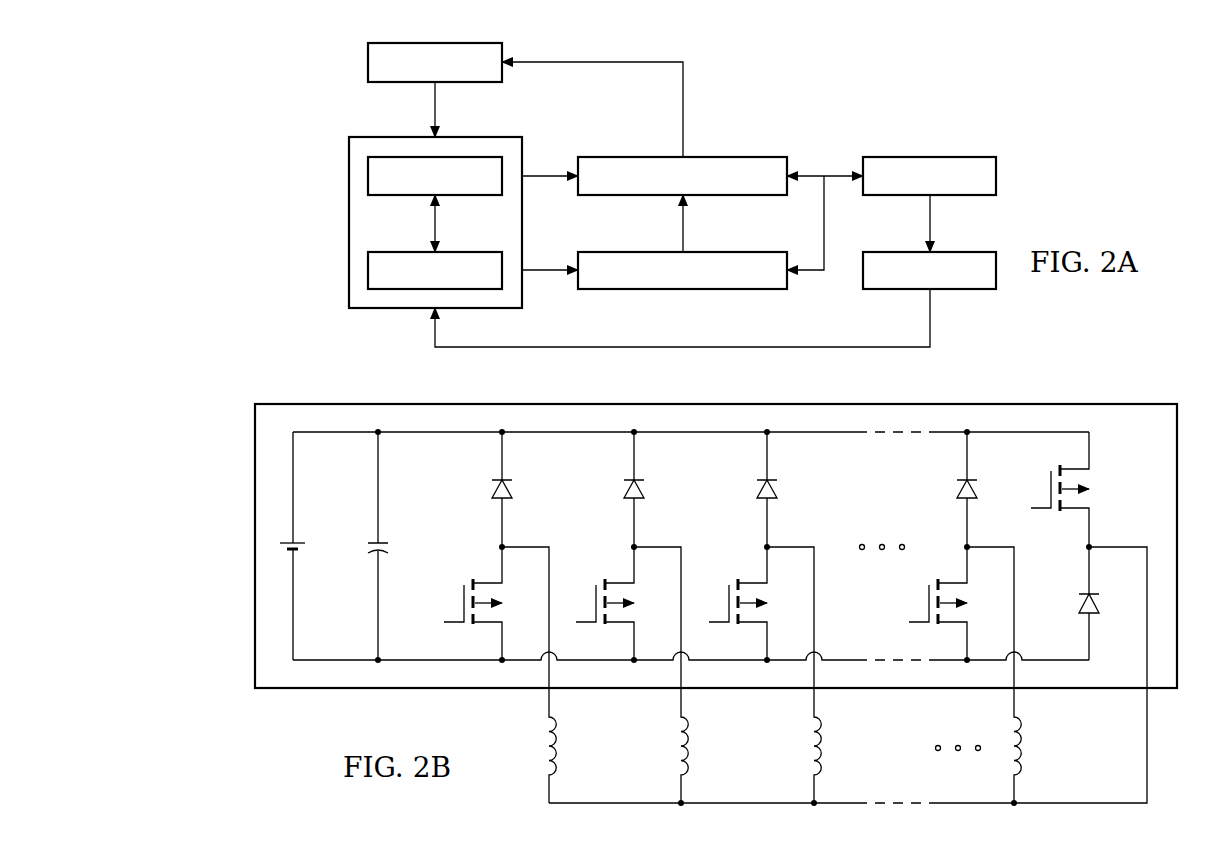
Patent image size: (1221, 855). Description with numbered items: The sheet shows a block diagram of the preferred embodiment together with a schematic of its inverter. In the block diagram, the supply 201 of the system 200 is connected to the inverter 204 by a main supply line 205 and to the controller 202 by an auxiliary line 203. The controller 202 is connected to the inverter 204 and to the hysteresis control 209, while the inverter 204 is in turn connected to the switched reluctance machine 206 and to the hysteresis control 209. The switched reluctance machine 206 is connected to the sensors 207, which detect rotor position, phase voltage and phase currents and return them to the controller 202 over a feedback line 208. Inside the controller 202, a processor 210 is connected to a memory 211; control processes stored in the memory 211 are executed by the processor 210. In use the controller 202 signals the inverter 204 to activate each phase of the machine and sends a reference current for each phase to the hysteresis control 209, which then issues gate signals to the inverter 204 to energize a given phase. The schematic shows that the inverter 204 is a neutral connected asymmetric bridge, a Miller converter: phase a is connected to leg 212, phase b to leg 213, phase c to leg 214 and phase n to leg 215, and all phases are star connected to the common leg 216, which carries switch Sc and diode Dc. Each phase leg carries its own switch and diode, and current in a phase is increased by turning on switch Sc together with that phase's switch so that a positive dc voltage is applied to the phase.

In FIG. 2A, the system 200 is at (842, 85).
In FIG. 2A, the supply 201 is at (368, 52).
In FIG. 2A, the controller 202 is at (349, 223).
In FIG. 2A, the auxiliary line 203 is at (433, 108).
In FIG. 2A, the inverter 204 is at (733, 157).
In FIG. 2B, the inverter 204 is at (255, 488).
In FIG. 2A, the main supply line 205 is at (683, 97).
In FIG. 2A, the switched reluctance machine 206 is at (943, 157).
In FIG. 2A, the sensors 207 is at (960, 290).
In FIG. 2A, the feedback line 208 is at (563, 346).
In FIG. 2A, the hysteresis control 209 is at (702, 290).
In FIG. 2A, the processor 210 is at (408, 196).
In FIG. 2A, the memory 211 is at (463, 252).
In FIG. 2B, the leg 212 is at (502, 528).
In FIG. 2B, the leg 213 is at (634, 528).
In FIG. 2B, the leg 214 is at (767, 528).
In FIG. 2B, the leg 215 is at (967, 528).
In FIG. 2B, the leg 216 is at (1089, 527).